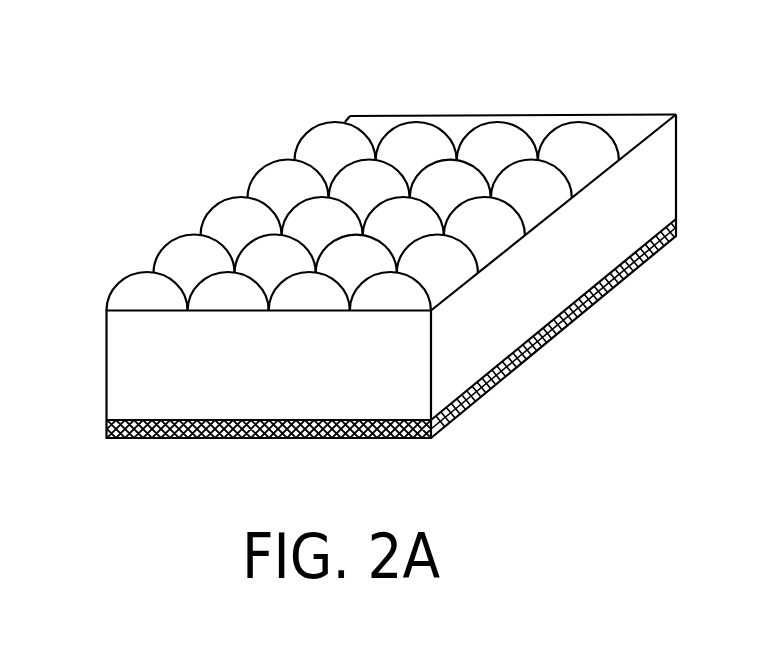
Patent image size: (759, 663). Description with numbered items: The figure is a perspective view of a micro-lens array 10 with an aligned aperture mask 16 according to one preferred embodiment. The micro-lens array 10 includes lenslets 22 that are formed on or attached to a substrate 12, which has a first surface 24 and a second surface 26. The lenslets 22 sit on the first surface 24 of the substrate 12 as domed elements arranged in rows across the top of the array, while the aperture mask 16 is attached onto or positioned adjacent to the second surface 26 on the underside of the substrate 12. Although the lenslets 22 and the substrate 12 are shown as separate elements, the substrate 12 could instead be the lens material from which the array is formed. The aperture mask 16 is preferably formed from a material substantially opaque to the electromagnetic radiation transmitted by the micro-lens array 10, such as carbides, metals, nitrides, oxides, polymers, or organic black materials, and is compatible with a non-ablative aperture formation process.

The micro-lens array 10 is at (380, 231).
The substrate 12 is at (677, 165).
The aperture mask 16 is at (676, 223).
The lenslets 22 is at (310, 122).
The first surface 24 is at (632, 123).
The second surface 26 is at (140, 419).